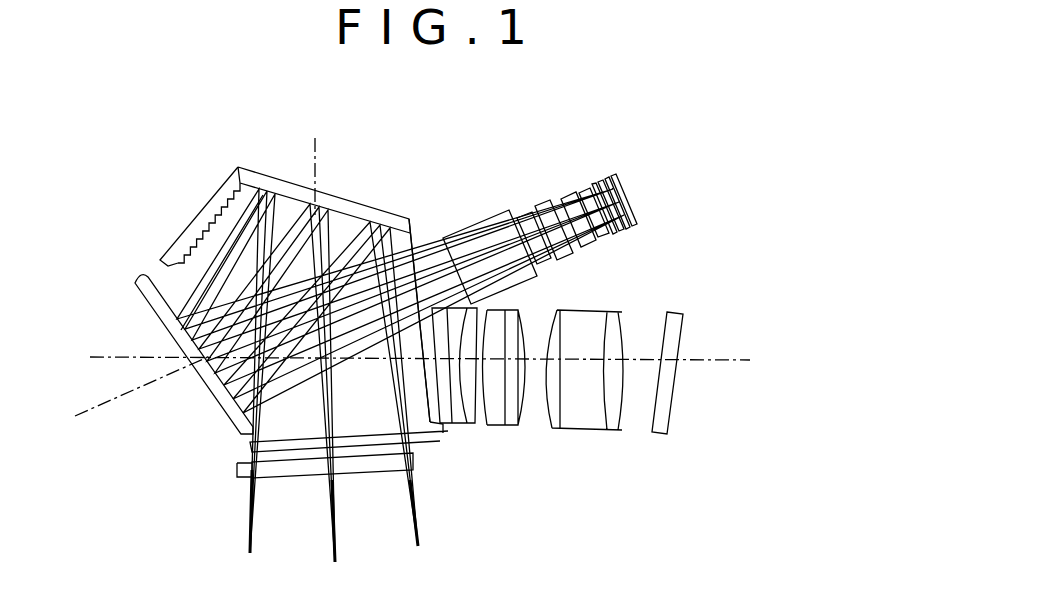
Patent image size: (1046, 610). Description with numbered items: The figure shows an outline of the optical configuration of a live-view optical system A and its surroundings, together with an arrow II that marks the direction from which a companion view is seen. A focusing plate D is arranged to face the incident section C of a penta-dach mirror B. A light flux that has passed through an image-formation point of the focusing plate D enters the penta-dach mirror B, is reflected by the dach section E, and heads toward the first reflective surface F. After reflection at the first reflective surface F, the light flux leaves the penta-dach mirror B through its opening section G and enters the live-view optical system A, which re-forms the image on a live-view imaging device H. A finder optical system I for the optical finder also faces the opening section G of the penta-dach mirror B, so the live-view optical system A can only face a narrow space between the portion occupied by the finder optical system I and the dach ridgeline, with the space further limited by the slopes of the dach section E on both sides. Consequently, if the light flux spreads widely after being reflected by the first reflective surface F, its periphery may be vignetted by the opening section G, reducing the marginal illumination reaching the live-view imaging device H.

The live-view optical system A is at (608, 155).
The penta-dach mirror B is at (217, 163).
The incident section C is at (368, 435).
The focusing plate D is at (277, 466).
The dach section E is at (279, 213).
The first reflective surface F is at (178, 313).
The opening section G is at (414, 250).
The live-view imaging device H is at (632, 214).
The finder optical system I is at (683, 438).
The arrow II is at (704, 170).